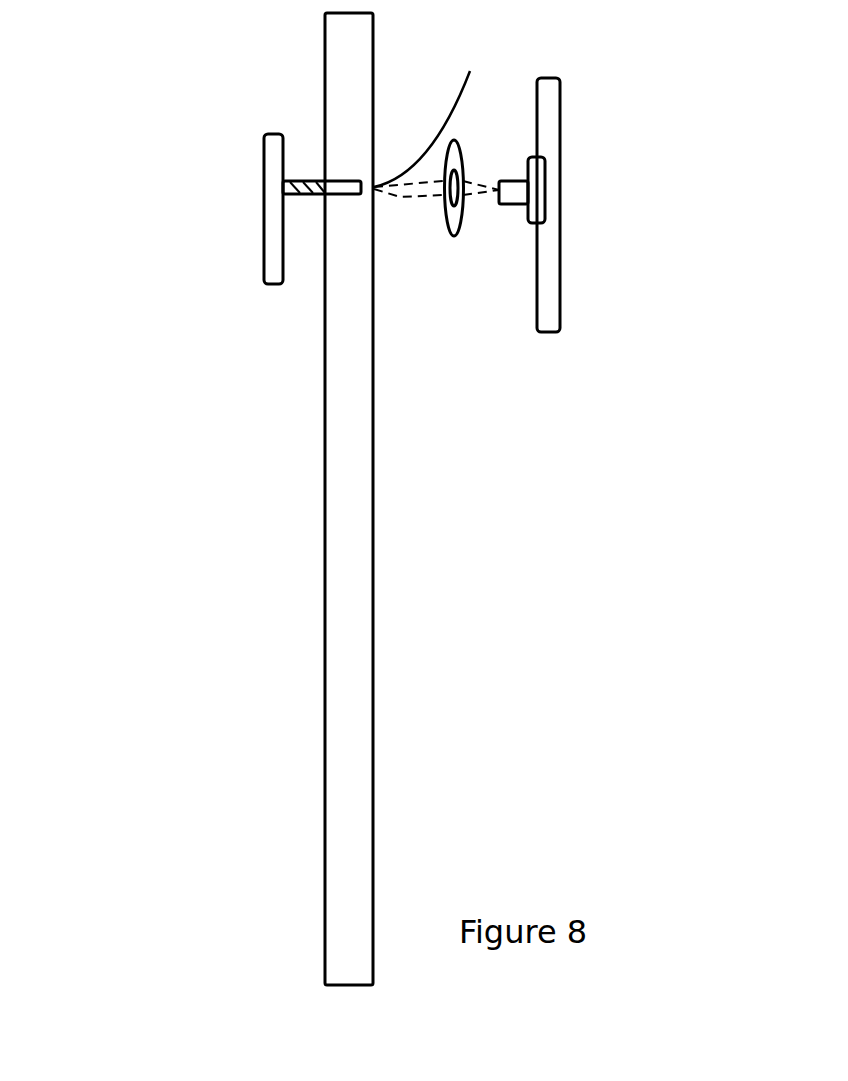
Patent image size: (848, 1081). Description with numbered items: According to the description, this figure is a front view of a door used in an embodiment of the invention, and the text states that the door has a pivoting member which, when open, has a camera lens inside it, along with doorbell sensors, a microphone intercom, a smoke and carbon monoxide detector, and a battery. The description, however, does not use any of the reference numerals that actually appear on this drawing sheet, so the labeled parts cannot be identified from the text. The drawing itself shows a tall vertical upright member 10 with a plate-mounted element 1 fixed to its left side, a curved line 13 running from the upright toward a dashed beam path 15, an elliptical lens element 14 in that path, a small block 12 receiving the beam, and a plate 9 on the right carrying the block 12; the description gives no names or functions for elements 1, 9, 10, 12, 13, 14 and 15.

The target assembly 1 is at (248, 189).
The mounting plate 9 is at (570, 197).
The pole 10 is at (388, 709).
The detector 12 is at (512, 205).
The optical fibre 13 is at (435, 103).
The lens 14 is at (455, 237).
The light beam 15 is at (401, 199).